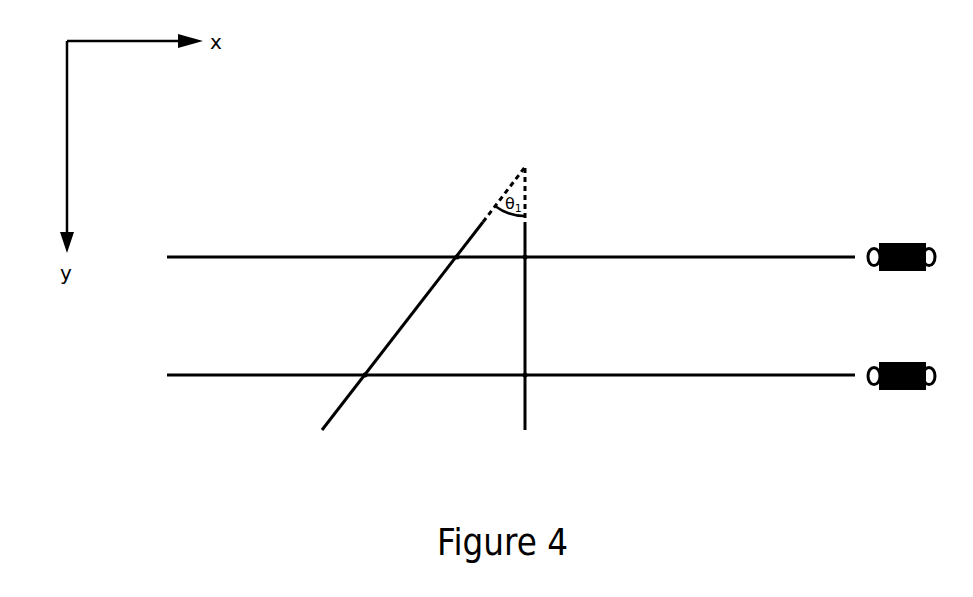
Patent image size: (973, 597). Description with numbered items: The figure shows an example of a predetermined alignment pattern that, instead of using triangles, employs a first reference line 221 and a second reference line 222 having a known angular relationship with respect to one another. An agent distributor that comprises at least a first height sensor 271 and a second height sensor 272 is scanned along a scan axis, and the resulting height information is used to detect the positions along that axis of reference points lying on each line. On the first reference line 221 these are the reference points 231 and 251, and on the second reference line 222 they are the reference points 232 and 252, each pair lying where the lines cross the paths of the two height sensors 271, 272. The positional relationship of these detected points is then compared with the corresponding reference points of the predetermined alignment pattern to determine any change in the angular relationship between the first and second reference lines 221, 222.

The first reference line 221 is at (328, 418).
The second reference line 222 is at (525, 408).
The first reference point on first reference line 231 is at (365, 377).
The first reference point on second reference line 232 is at (527, 377).
The second reference point on first reference line 251 is at (455, 253).
The second reference point on second reference line 252 is at (527, 253).
The first height sensor 271 is at (900, 390).
The second height sensor 272 is at (902, 245).